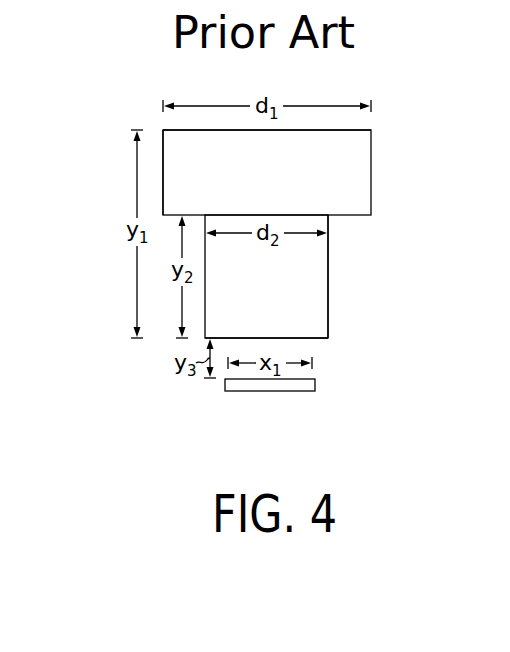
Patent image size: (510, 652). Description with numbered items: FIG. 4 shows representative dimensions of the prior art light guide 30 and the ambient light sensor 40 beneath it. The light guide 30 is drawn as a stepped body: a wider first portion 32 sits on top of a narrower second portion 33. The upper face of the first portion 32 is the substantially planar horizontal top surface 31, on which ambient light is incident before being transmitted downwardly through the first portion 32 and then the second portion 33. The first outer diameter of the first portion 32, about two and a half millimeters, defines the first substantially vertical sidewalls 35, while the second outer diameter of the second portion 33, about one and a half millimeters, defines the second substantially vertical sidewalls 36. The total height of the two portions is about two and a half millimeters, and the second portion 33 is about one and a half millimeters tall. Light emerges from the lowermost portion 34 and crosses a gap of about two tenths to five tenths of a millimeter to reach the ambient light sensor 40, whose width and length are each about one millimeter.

The light guide 30 is at (239, 218).
The substantially planar horizontal top surface 31 is at (183, 130).
The first portion 32 is at (372, 160).
The second portion 33 is at (302, 300).
The lowermost portion 34 is at (319, 338).
The first substantially vertical sidewalls 35 is at (163, 165).
The second substantially vertical sidewalls 36 is at (329, 250).
The ambient light sensor 40 is at (225, 386).